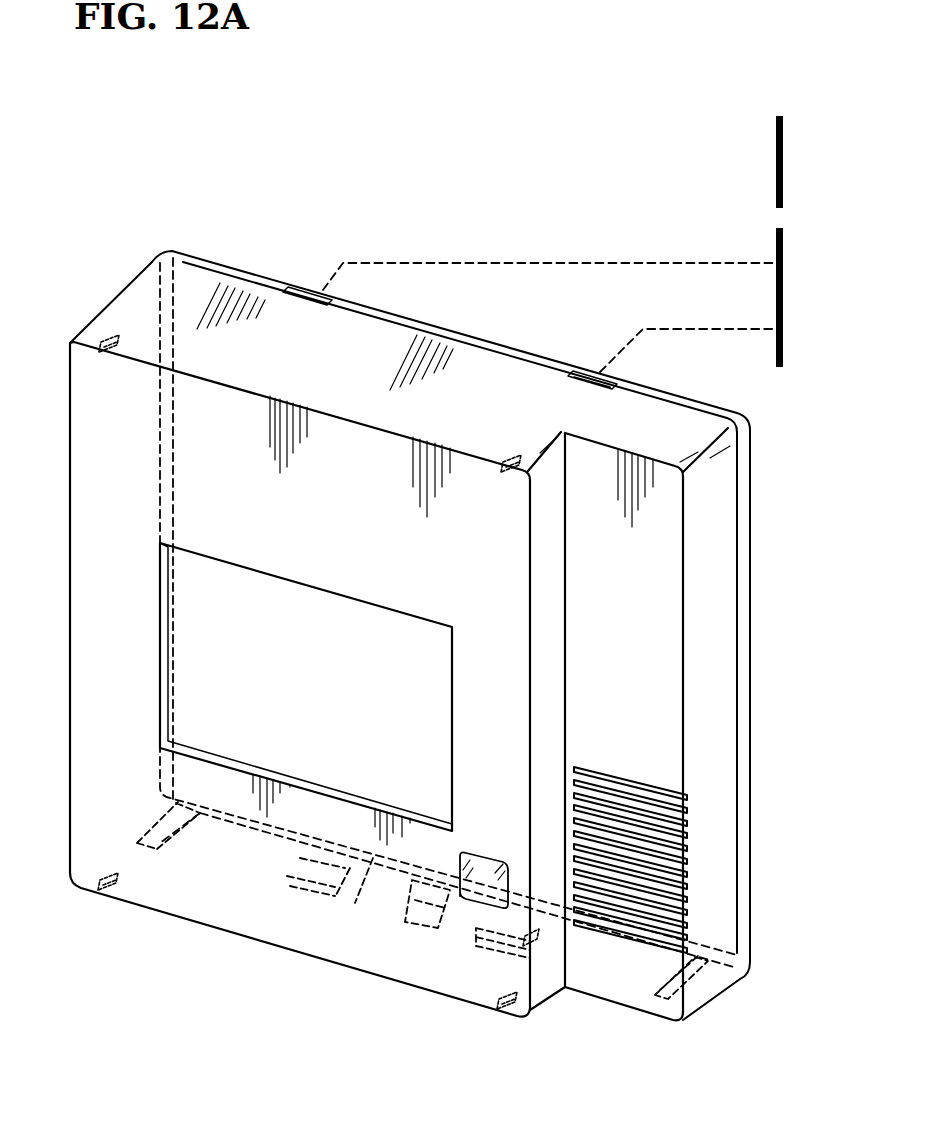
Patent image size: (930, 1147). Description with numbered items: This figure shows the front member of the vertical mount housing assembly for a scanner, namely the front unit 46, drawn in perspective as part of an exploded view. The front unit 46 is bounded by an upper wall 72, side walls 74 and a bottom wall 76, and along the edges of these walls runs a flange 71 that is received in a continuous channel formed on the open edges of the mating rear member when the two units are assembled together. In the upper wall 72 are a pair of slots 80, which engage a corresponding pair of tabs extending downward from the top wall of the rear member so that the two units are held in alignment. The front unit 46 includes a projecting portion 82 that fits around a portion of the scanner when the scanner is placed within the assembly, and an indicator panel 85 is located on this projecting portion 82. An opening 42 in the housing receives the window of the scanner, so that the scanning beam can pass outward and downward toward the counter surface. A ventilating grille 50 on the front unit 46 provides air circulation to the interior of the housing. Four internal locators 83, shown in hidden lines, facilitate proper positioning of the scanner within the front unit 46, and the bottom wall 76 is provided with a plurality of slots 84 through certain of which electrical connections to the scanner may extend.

The opening 42 is at (248, 762).
The front unit 46 is at (92, 488).
The ventilating grille 50 is at (665, 790).
The flange 71 is at (686, 396).
The upper wall 72 is at (406, 316).
The side walls 74 is at (173, 420).
The bottom wall 76 is at (258, 829).
The slots 80 is at (303, 290).
The projecting portion 82 is at (85, 376).
The internal locators 83 is at (113, 332).
The slots 84 is at (168, 838).
The indicator panel 85 is at (476, 855).